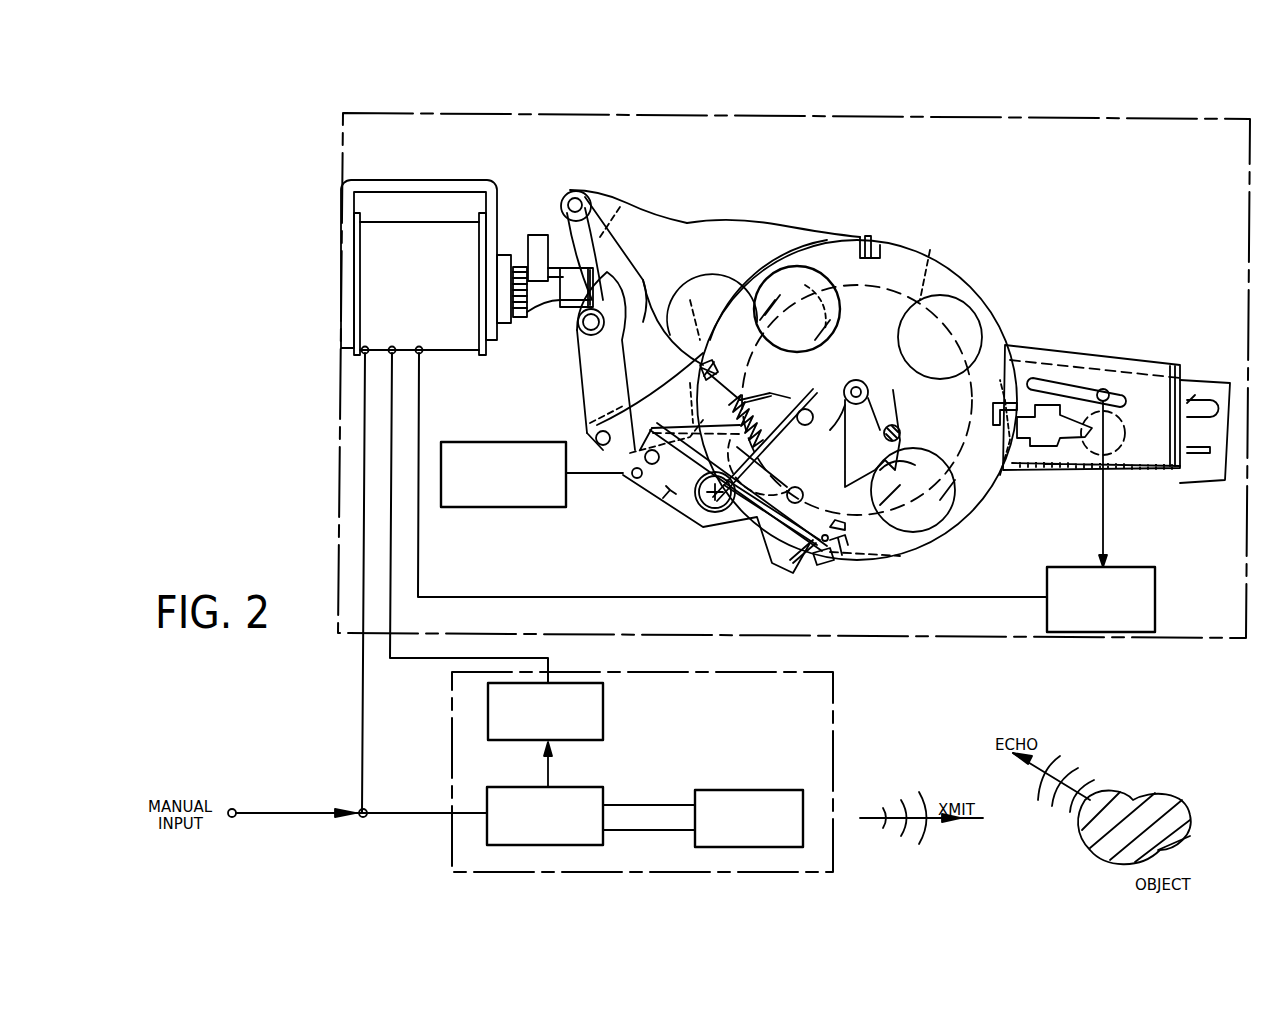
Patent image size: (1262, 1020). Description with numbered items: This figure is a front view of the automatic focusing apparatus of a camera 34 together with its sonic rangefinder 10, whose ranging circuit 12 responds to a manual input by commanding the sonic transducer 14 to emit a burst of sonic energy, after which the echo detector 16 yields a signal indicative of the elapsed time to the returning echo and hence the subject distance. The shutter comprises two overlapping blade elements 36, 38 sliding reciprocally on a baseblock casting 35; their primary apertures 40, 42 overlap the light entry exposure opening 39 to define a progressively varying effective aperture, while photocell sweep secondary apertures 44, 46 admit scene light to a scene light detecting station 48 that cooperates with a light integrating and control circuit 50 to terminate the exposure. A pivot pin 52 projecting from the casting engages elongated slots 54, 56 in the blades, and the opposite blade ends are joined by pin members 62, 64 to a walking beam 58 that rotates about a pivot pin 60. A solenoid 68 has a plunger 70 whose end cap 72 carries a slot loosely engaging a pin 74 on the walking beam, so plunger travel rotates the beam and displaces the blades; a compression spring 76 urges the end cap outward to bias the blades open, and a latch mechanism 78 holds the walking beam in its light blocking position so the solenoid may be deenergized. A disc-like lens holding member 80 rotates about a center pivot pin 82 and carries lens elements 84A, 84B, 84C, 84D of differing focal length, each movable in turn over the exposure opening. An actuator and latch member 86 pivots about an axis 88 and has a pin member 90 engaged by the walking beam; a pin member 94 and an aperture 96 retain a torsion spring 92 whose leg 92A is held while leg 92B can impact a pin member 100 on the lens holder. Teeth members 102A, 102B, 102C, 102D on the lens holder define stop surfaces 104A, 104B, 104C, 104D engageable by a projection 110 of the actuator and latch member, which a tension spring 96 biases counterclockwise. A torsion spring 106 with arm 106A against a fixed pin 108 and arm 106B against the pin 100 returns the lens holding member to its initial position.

The sonic rangefinder 10 is at (740, 672).
The ranging circuit 12 is at (585, 790).
The sonic transducer 14 is at (750, 792).
The echo detector 16 is at (603, 710).
The camera 34 is at (851, 205).
The baseblock casting 35 is at (1052, 268).
The shutter blade element 36 is at (751, 268).
The shutter blade element 38 is at (1012, 475).
The light entry exposure opening 39 is at (825, 290).
The primary aperture 40 is at (727, 245).
The primary aperture 42 is at (936, 255).
The photocell sweep secondary aperture 44 is at (1055, 378).
The photocell sweep secondary aperture 46 is at (1190, 478).
The scene light detecting station 48 is at (1125, 470).
The light integrating and control circuit 50 is at (1160, 582).
The pivot pin 52 is at (1105, 388).
The elongated slot 54 is at (1040, 372).
The elongated slot 56 is at (1200, 403).
The walking beam 58 is at (590, 385).
The pivot pin 60 is at (598, 311).
The pin member 62 is at (585, 200).
The pin member 64 is at (653, 441).
The solenoid 68 is at (413, 182).
The cylindrical plunger unit 70 is at (548, 216).
The end cap 72 is at (640, 222).
The pin 74 is at (612, 225).
The compression spring 76 is at (522, 317).
The latch mechanism 78 is at (478, 507).
The lens holding member 80 is at (955, 260).
The center pivot pin 82 is at (858, 386).
The lens element 84A is at (795, 275).
The lens element 84B is at (952, 312).
The lens element 84C is at (942, 508).
The lens element 84D is at (738, 378).
The actuator and latch member 86 is at (726, 535).
The axis 88 is at (705, 522).
The pin member 90 is at (662, 397).
The torsion spring 92 is at (805, 515).
The leg of torsion spring 92A is at (790, 565).
The leg of torsion spring 92B is at (766, 430).
The pin member 94 is at (668, 503).
The tension spring 96 is at (718, 372).
The pin member 100 is at (808, 408).
The tooth member 102A is at (872, 235).
The tooth member 102B is at (1026, 318).
The tooth member 102C is at (895, 556).
The tooth member 102D is at (691, 305).
The stop surface 104A is at (880, 255).
The stop surface 104B is at (1025, 438).
The stop surface 104C is at (822, 566).
The stop surface 104D is at (697, 485).
The torsion spring 106 is at (882, 413).
The arm of torsion spring 106A is at (882, 472).
The arm of torsion spring 106B is at (835, 436).
The fixed pin 108 is at (900, 430).
The stop projection 110 is at (840, 574).